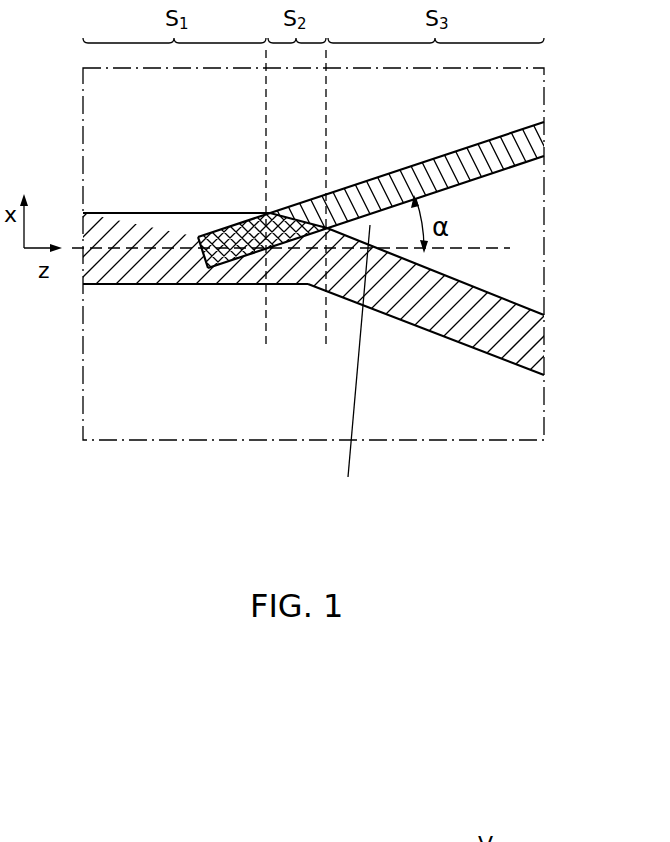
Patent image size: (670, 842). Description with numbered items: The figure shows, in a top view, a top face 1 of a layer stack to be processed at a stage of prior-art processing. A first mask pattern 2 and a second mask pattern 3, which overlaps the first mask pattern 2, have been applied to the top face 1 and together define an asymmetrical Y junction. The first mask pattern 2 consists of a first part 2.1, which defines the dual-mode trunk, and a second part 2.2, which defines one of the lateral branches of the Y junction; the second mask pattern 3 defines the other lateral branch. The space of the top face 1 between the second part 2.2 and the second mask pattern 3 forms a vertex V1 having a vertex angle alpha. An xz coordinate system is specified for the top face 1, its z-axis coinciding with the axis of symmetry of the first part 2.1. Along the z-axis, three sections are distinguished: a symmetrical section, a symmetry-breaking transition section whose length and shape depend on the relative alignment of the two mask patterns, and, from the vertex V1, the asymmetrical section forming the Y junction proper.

The top face 1 is at (136, 405).
The first mask pattern 2 is at (335, 256).
The first part of the first mask pattern 2.1 is at (160, 285).
The second part of the first mask pattern 2.2 is at (443, 339).
The second mask pattern 3 is at (497, 155).
The vertex V1 is at (354, 371).